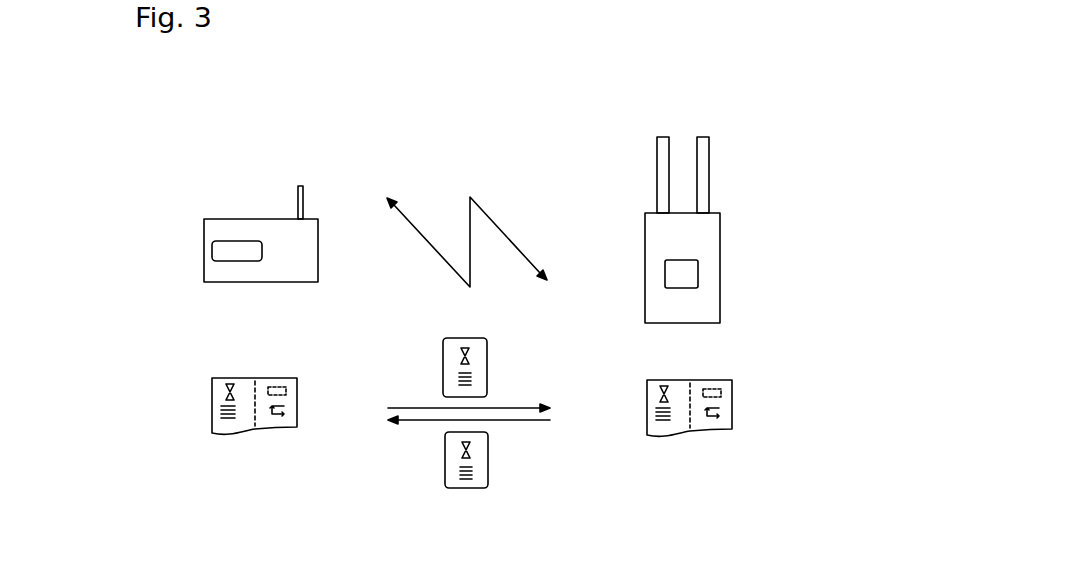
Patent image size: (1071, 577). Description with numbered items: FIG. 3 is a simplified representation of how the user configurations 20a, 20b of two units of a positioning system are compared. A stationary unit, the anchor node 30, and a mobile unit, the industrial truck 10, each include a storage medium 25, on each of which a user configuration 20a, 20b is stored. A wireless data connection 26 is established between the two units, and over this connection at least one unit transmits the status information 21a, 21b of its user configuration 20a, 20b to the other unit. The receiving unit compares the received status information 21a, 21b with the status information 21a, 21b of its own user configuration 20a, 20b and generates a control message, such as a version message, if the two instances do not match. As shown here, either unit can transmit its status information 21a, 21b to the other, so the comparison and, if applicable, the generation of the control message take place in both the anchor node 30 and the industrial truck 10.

The industrial truck 10 is at (710, 213).
The user configuration 20a is at (212, 402).
The user configuration 20b is at (733, 405).
The status information 21a is at (443, 370).
The status information 21b is at (445, 470).
The storage medium 25 is at (228, 250).
The wireless data connection 26 is at (487, 212).
The anchor node 30 is at (204, 247).